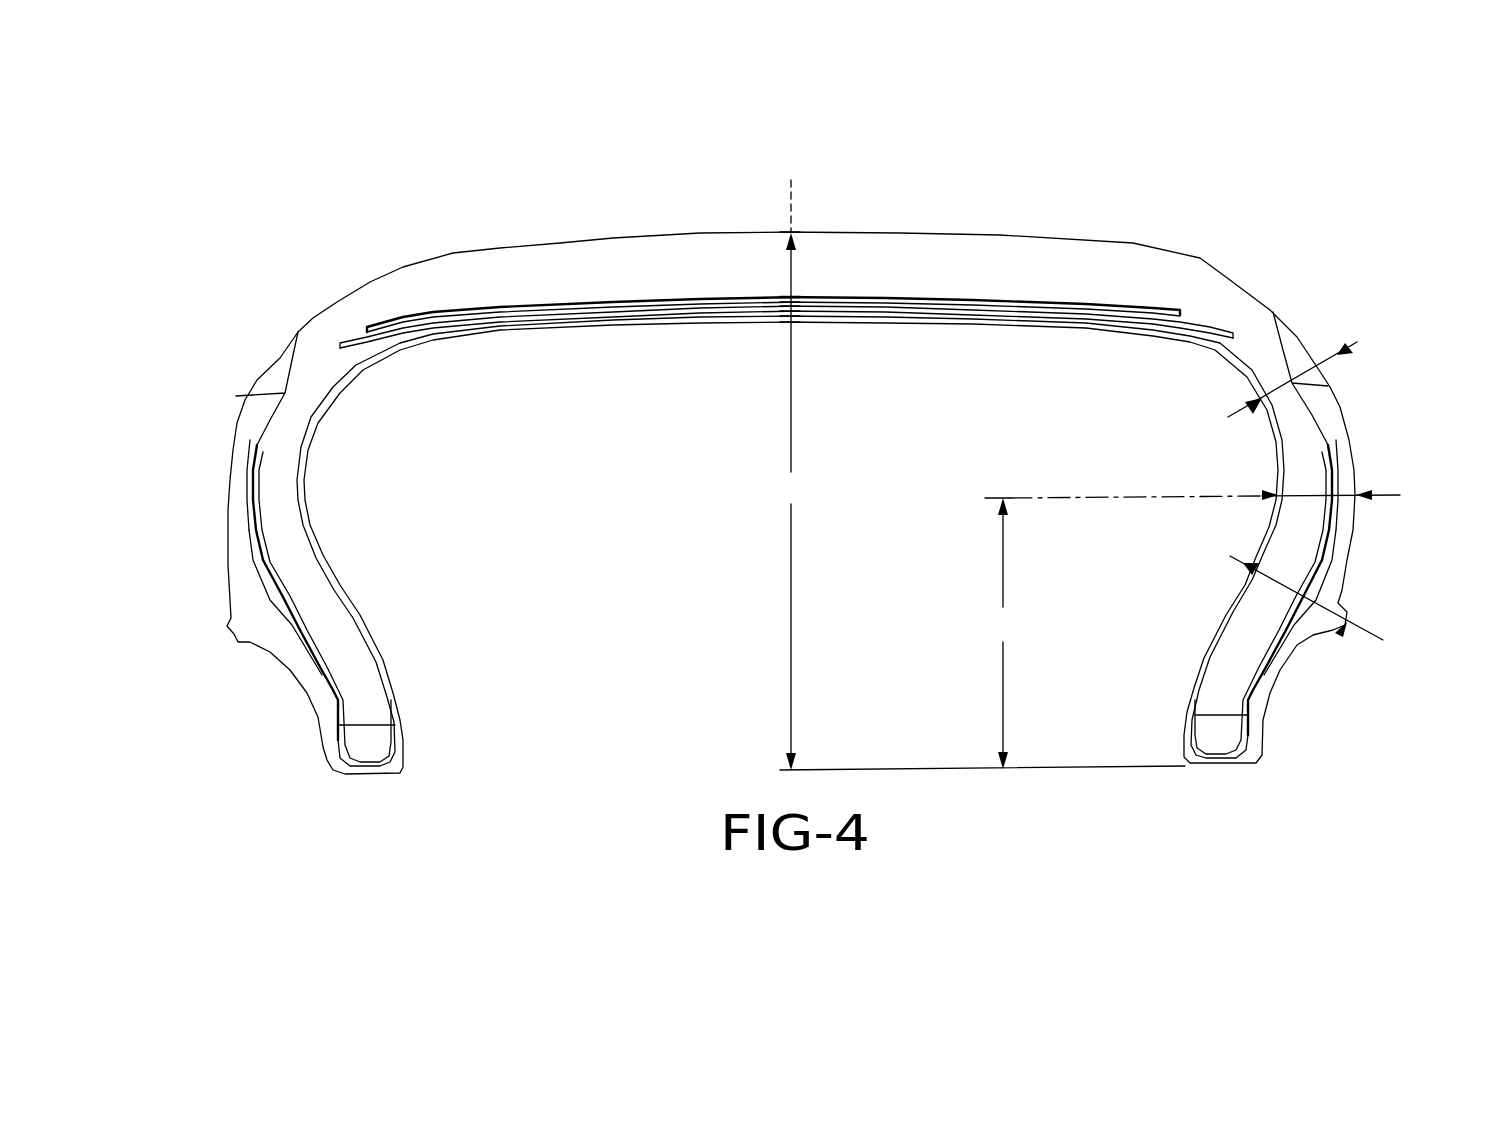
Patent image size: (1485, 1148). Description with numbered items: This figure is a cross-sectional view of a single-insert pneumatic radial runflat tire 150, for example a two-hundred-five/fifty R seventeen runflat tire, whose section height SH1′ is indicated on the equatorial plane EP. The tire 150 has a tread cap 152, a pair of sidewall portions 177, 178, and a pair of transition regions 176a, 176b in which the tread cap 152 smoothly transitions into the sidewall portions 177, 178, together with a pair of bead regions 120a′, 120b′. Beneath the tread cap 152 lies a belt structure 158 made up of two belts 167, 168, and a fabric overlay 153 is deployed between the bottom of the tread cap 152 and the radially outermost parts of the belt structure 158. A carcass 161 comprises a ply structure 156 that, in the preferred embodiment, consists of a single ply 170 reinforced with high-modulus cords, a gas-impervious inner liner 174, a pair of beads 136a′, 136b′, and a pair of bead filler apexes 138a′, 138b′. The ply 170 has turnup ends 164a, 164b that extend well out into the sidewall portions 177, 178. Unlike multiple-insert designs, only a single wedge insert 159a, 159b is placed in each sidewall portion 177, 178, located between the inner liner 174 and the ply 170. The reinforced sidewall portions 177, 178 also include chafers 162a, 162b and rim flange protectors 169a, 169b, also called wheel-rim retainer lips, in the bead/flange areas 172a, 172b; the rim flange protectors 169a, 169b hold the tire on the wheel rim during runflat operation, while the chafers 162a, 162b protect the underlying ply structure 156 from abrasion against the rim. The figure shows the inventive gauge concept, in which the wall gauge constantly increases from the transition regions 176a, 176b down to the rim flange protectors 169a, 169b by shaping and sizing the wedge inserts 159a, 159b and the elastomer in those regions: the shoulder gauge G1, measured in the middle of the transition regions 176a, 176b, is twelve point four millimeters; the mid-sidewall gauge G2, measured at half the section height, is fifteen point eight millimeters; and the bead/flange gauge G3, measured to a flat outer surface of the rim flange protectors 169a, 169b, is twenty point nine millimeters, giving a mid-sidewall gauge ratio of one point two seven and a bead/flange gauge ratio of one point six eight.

The tire 150 is at (317, 243).
The tread cap 152 is at (945, 258).
The fabric overlay 153 is at (622, 298).
The ply structure 156 is at (678, 311).
The belt structure 158 is at (1075, 313).
The carcass 161 is at (578, 318).
The belt 167 is at (1220, 327).
The belt 168 is at (1180, 310).
The inner liner 174 is at (333, 398).
The transition region 176a is at (282, 352).
The transition region 176b is at (1293, 343).
The sidewall portion 177 is at (235, 427).
The sidewall portion 178 is at (1338, 410).
The wedge insert 159a is at (277, 472).
The wedge insert 159b is at (1300, 463).
The turnup end 164a is at (250, 452).
The turnup end 164b is at (1328, 440).
The single ply 170 is at (262, 528).
The rim flange protector 169a is at (238, 607).
The rim flange protector 169b is at (1342, 596).
The bead/flange area 172a is at (236, 654).
The bead/flange area 172b is at (1338, 650).
The chafer 162a is at (312, 683).
The chafer 162b is at (1273, 663).
The bead 136a′ is at (374, 744).
The bead 136b′ is at (1213, 730).
The bead filler apex 138a′ is at (350, 677).
The bead filler apex 138b′ is at (1232, 663).
The bead region 120a′ is at (363, 710).
The bead region 120b′ is at (1222, 700).
The equatorial plane EP is at (790, 190).
The section height SH1′ is at (976, 501).
The shoulder gauge G1 is at (1236, 421).
The mid-sidewall gauge G2 is at (1307, 497).
The bead/flange gauge G3 is at (1228, 556).